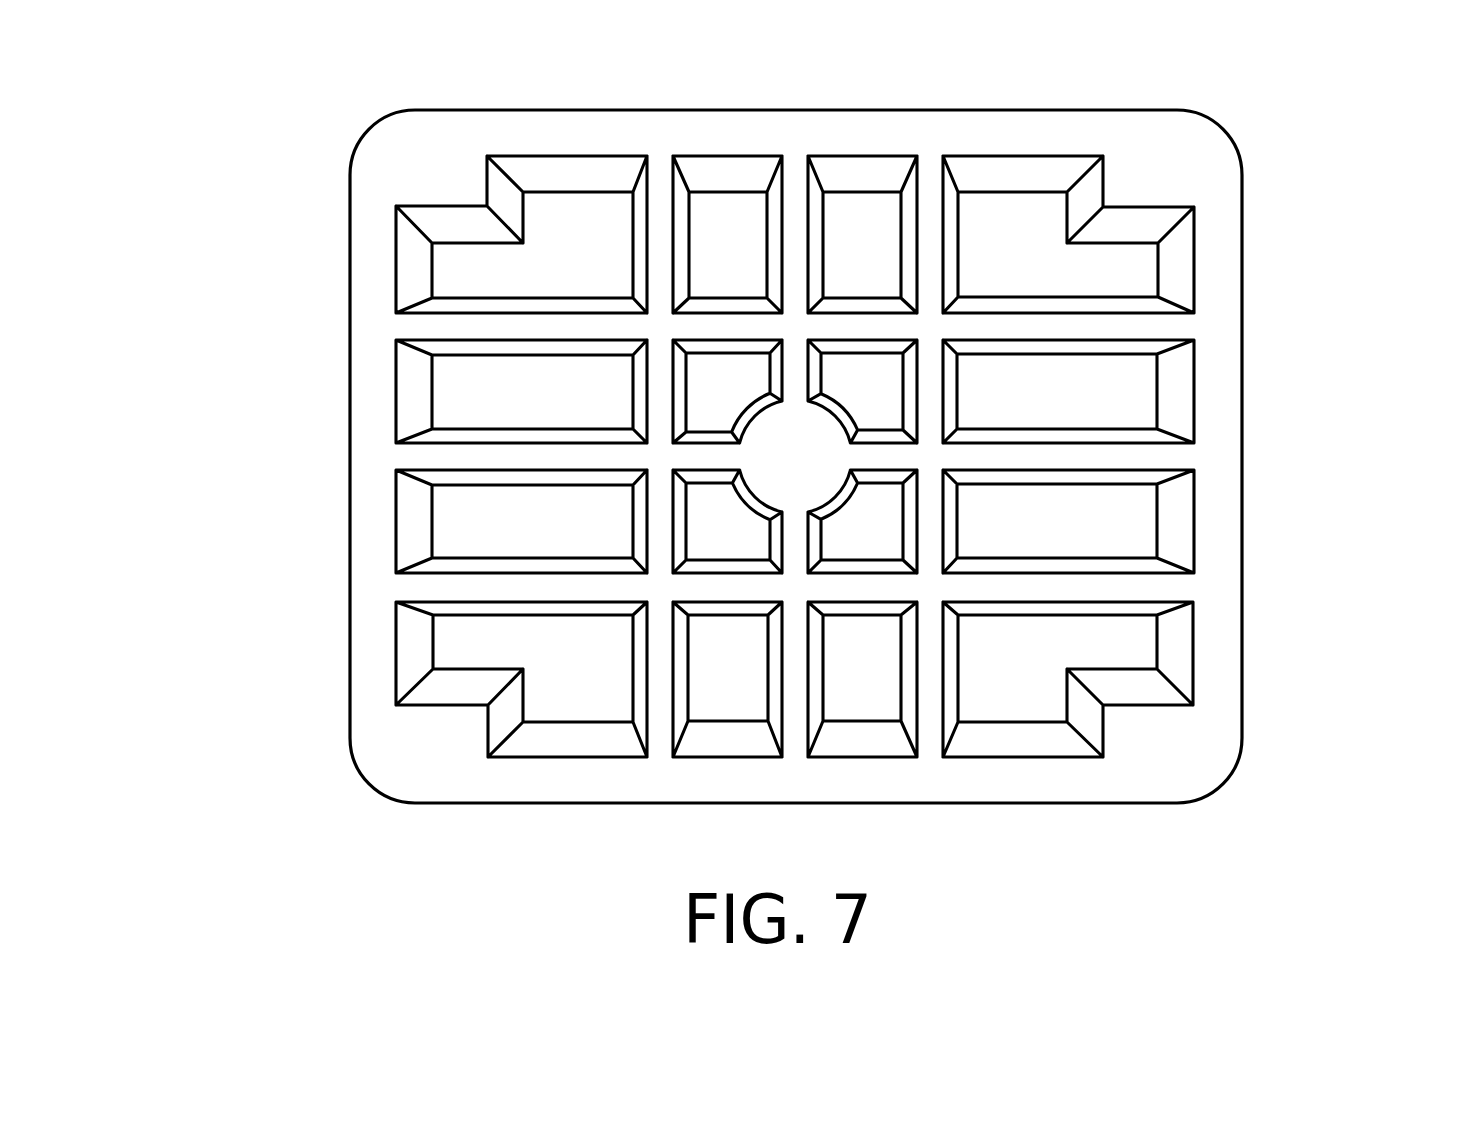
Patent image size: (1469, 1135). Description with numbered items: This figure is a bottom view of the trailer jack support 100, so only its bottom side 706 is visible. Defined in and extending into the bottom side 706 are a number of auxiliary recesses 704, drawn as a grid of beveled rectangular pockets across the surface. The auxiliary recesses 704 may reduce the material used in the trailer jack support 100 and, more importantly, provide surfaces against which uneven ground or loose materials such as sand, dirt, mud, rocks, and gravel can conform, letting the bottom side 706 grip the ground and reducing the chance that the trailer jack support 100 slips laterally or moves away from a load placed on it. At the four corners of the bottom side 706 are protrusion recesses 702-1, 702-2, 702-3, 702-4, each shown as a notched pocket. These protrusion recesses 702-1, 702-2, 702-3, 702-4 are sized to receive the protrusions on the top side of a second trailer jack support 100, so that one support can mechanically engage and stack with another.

The trailer jack support 100 is at (151, 56).
The bottom side 706 is at (418, 143).
The protrusion recess 702-1 is at (565, 208).
The protrusion recess 702-2 is at (1028, 213).
The protrusion recess 702-3 is at (1057, 640).
The protrusion recess 702-4 is at (563, 708).
The auxiliary recess 704 is at (458, 398).